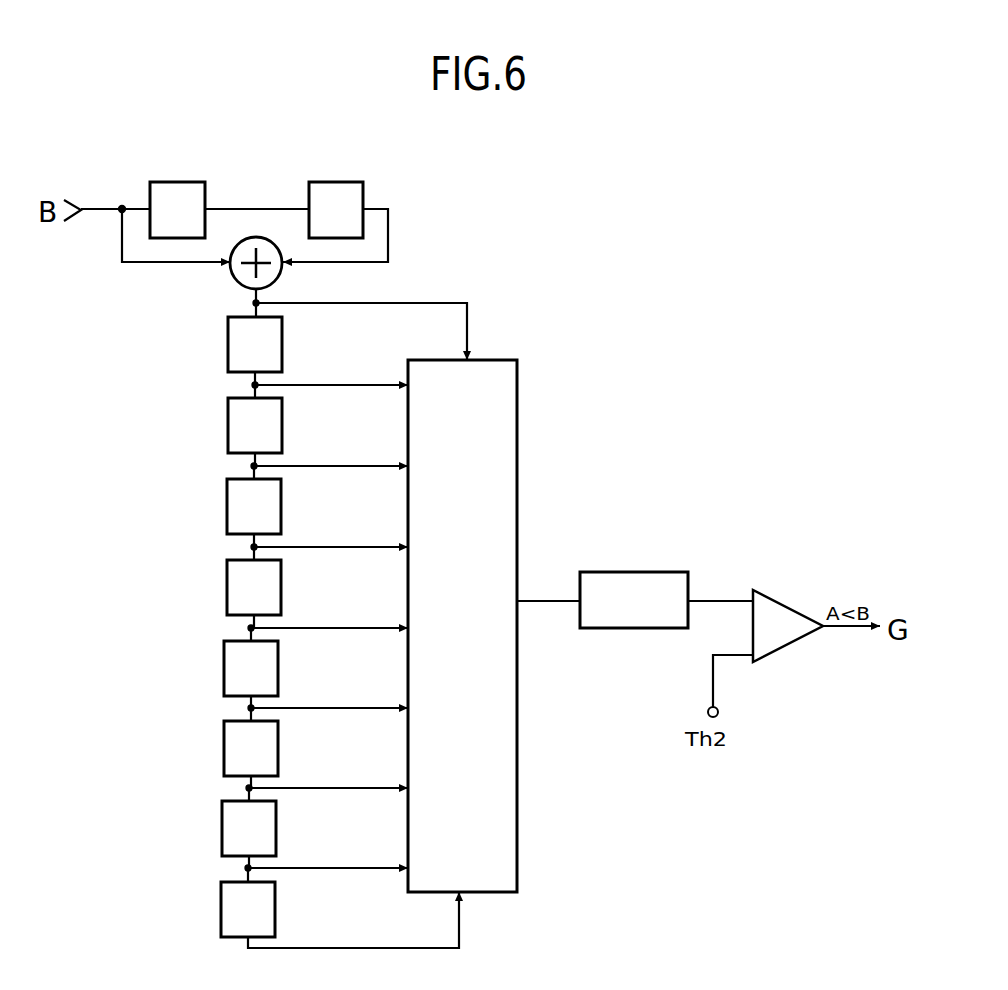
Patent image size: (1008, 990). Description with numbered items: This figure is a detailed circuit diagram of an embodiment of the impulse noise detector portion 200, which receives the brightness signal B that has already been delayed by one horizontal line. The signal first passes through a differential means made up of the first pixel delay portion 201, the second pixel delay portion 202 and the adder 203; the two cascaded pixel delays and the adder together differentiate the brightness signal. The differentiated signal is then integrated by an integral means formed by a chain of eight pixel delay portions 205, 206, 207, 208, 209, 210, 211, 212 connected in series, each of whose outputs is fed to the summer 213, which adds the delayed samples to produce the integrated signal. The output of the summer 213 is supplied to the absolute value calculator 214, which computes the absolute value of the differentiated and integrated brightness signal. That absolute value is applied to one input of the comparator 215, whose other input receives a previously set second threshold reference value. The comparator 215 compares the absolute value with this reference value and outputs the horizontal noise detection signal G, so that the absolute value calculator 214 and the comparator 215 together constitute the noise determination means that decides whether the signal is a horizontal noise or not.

The impulse noise detector portion 200 is at (600, 312).
The first pixel delay portion 201 is at (150, 200).
The second pixel delay portion 202 is at (363, 192).
The adder 203 is at (282, 282).
The pixel delay portion 205 is at (228, 347).
The pixel delay portion 206 is at (228, 428).
The pixel delay portion 207 is at (227, 509).
The pixel delay portion 208 is at (227, 590).
The pixel delay portion 209 is at (224, 671).
The pixel delay portion 210 is at (224, 751).
The pixel delay portion 211 is at (222, 831).
The pixel delay portion 212 is at (221, 912).
The summer 213 is at (496, 360).
The absolute value calculator 214 is at (636, 572).
The comparator 215 is at (791, 605).